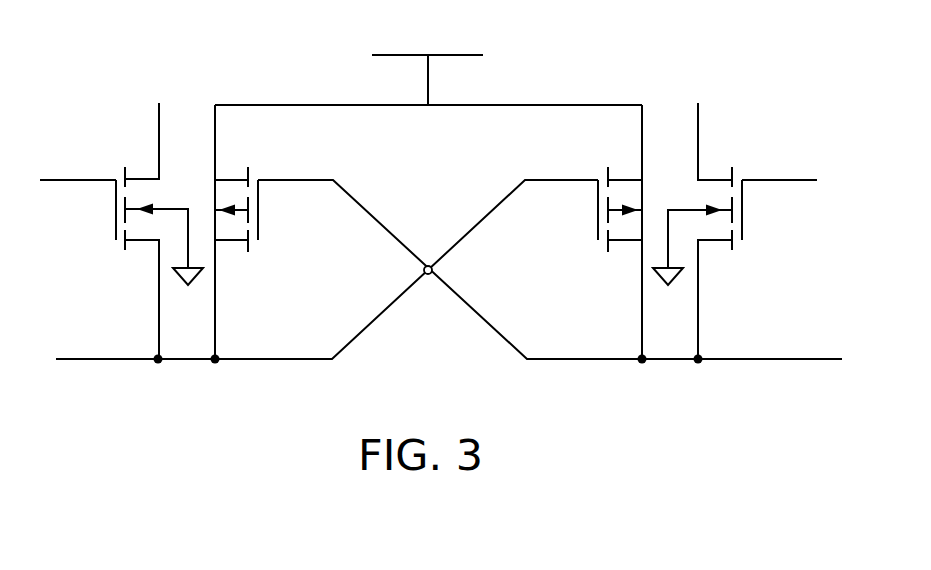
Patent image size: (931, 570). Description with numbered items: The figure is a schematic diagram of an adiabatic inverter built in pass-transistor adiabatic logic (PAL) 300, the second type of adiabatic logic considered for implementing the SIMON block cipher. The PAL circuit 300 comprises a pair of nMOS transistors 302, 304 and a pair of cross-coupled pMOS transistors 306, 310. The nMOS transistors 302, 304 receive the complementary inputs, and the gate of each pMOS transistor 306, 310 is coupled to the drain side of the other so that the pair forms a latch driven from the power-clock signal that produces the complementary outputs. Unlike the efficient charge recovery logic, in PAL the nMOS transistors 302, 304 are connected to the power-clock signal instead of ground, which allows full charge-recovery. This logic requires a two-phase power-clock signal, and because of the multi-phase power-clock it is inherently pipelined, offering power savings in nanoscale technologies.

The pass-transistor adiabatic logic 300 is at (117, 103).
The nMOS transistor 302 is at (110, 232).
The nMOS transistor 304 is at (748, 232).
The cross-coupled pMOS transistor 306 is at (595, 167).
The cross-coupled pMOS transistor 310 is at (262, 168).